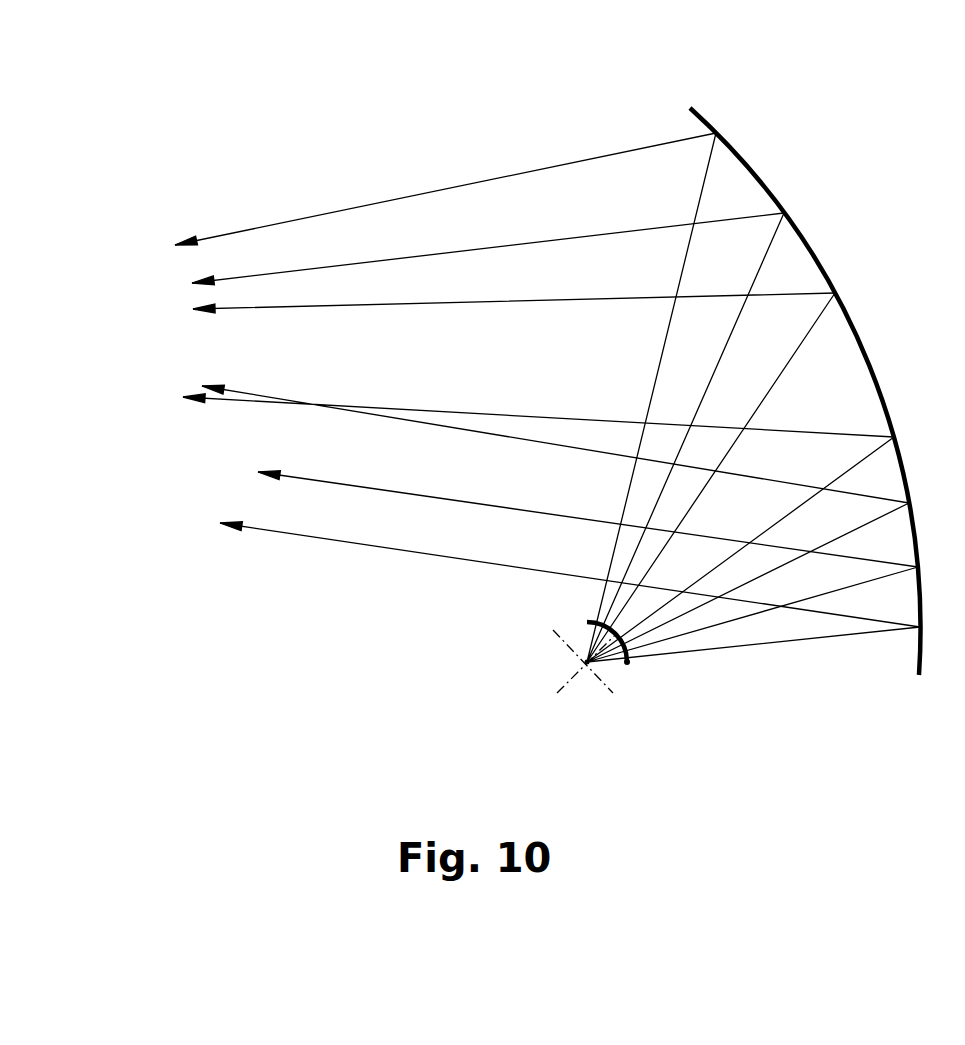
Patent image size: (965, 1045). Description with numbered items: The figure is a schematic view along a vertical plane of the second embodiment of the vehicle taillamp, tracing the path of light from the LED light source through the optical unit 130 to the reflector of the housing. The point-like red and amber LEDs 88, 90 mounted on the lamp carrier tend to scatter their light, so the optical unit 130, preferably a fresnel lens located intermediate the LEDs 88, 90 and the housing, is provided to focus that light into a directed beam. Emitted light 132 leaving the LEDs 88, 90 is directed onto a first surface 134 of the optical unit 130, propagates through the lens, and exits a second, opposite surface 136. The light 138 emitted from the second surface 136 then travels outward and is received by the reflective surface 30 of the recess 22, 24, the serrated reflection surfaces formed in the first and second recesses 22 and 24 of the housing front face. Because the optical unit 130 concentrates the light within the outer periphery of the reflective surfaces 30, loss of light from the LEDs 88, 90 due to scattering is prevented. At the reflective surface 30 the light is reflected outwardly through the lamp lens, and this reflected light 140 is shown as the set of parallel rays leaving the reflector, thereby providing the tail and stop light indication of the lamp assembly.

The first recess 22 is at (805, 391).
The second recess 24 is at (805, 391).
The reflection surface 30 is at (857, 342).
The red-colored LED 88 is at (521, 668).
The amber-colored LED 90 is at (587, 662).
The optical unit 130 is at (587, 623).
The emitted light 132 is at (605, 667).
The first surface 134 is at (628, 664).
The second surface 136 is at (630, 650).
The light emitted from the second surface 138 is at (787, 360).
The reflected light 140 is at (408, 302).